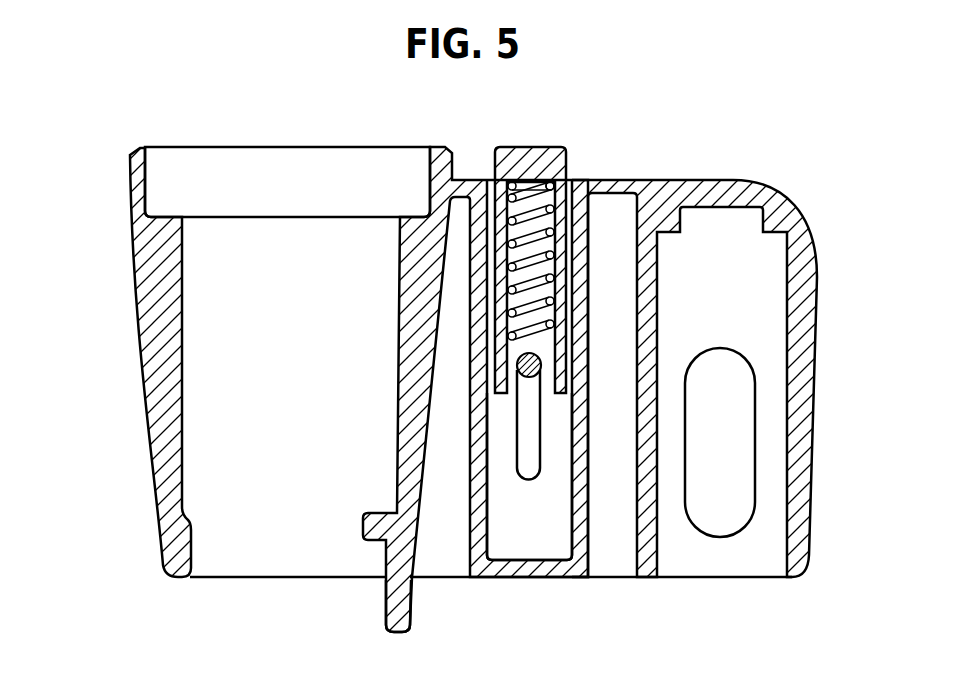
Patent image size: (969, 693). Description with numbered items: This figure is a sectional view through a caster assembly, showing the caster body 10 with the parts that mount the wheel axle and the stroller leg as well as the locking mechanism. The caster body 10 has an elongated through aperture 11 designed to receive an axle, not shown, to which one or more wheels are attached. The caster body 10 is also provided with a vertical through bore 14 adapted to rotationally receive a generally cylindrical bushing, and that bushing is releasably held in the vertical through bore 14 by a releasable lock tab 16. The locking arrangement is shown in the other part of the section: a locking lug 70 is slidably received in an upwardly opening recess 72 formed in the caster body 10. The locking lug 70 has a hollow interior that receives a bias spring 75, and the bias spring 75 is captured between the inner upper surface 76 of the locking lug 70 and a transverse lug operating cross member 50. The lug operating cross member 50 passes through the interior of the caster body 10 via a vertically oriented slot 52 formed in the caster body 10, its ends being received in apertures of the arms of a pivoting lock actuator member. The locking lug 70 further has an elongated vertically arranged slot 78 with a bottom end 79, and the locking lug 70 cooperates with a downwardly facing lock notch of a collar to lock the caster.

The caster body 10 is at (118, 284).
The elongated through aperture 11 is at (738, 412).
The vertical through bore 14 is at (268, 268).
The releasable lock tab 16 is at (395, 619).
The lug operating cross member 50 is at (534, 493).
The vertically oriented slot 52 is at (523, 482).
The locking lug 70 is at (535, 147).
The upwardly opening recess 72 is at (550, 527).
The bias spring 75 is at (580, 182).
The inner upper surface 76 is at (522, 178).
The elongated vertically arranged slot 78 is at (540, 351).
The bottom end 79 is at (530, 380).